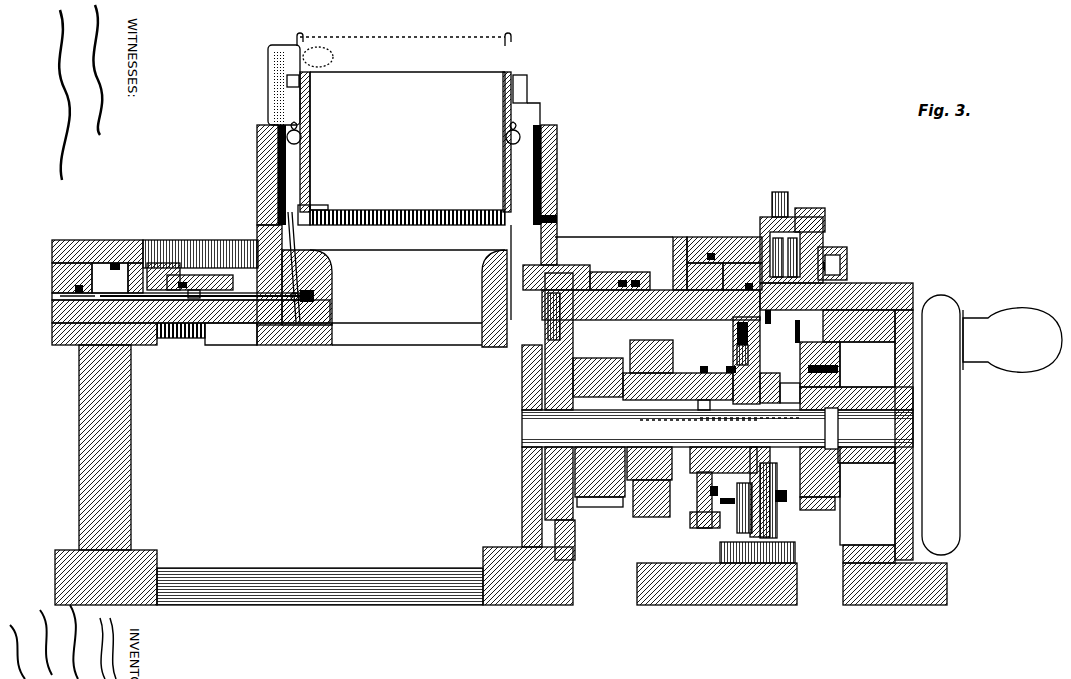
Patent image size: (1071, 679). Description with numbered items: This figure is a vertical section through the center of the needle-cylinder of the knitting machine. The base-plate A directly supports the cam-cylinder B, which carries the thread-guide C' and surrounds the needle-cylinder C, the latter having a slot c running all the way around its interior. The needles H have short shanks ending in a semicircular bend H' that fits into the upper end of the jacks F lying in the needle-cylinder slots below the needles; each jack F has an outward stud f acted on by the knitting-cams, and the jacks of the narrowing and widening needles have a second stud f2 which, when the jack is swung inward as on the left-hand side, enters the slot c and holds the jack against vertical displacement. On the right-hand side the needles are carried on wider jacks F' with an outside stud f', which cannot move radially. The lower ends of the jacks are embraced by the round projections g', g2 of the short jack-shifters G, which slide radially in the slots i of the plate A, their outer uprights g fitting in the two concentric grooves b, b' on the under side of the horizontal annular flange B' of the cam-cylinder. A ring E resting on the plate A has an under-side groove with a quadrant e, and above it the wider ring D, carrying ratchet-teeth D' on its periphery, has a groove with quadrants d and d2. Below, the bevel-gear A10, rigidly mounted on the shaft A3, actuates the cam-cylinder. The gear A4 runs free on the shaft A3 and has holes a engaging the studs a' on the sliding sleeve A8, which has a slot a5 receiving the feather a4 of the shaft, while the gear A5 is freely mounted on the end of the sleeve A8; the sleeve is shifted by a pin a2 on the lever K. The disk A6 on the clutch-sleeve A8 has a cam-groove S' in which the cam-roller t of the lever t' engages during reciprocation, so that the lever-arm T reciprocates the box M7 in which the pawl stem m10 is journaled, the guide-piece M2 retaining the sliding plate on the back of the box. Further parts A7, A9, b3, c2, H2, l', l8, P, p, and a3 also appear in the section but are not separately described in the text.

The base-plate A is at (55, 320).
The shaft A3 is at (522, 430).
The gear A4 is at (843, 366).
The gear A5 is at (618, 360).
The disk A6 is at (797, 340).
The block A7 is at (656, 358).
The coupling sleeve A8 is at (680, 380).
The column A9 is at (680, 260).
The bevel-gear A10 is at (573, 350).
The cam-cylinder B is at (562, 195).
The annular flange B' is at (620, 269).
The groove b is at (629, 267).
The groove b' is at (645, 267).
The column b3 is at (260, 220).
The needle-cylinder C is at (407, 141).
The thread-guide C' is at (279, 72).
The slot c is at (407, 213).
The channel c2 is at (85, 293).
The ring D is at (97, 240).
The ratchet-teeth D' is at (200, 253).
The groove quadrant d is at (718, 253).
The groove quadrant d2 is at (117, 278).
The ring E is at (55, 277).
The groove quadrant e is at (760, 300).
The jack F is at (316, 142).
The jack F' is at (496, 196).
The stud f is at (312, 205).
The stud f2 is at (328, 212).
The stud f' is at (556, 213).
The jack-shifter G is at (256, 298).
The upright g is at (206, 318).
The round projection g' is at (319, 267).
The round projection g2 is at (318, 297).
The needle H is at (408, 41).
The semicircular bend H' is at (403, 133).
The block H2 is at (287, 85).
The slot i is at (58, 298).
The lever K is at (704, 528).
The spring l' is at (747, 492).
The pin l8 is at (710, 492).
The guide-piece M2 is at (815, 211).
The box M7 is at (762, 217).
The pawl stem m10 is at (788, 195).
The plug P is at (847, 253).
The pin p is at (828, 262).
The cam-groove S' is at (723, 343).
The lever-arm T is at (762, 330).
The cam-roller t is at (728, 354).
The lever t' is at (709, 354).
The holes a is at (803, 444).
The studs a' is at (785, 448).
The pin a2 is at (728, 504).
The pin a3 is at (704, 400).
The feather a4 is at (728, 410).
The slot a5 is at (668, 413).